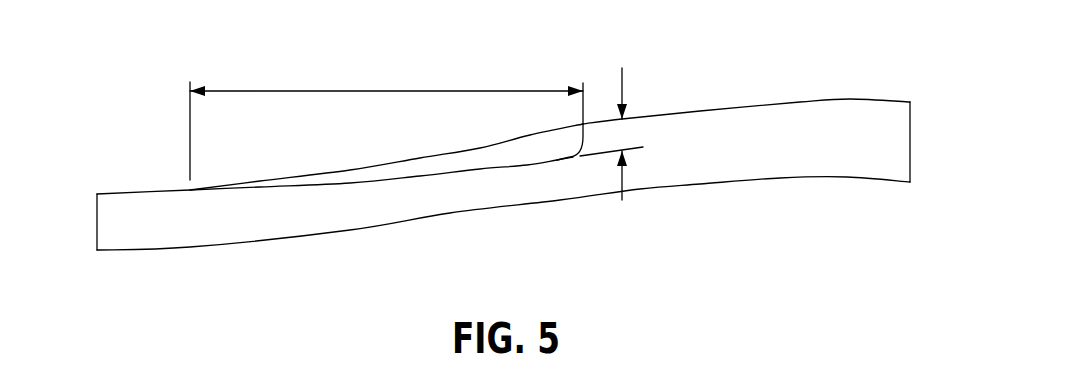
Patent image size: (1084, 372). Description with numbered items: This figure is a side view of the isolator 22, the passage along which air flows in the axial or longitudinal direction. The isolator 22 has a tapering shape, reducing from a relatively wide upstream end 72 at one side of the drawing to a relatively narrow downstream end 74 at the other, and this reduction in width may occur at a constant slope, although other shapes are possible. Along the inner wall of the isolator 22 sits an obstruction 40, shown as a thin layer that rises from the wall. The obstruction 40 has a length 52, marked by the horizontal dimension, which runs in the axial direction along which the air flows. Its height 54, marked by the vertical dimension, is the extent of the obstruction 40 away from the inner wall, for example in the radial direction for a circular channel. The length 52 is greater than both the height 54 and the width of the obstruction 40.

The isolator 22 is at (386, 141).
The obstruction 40 is at (510, 141).
The length 52 is at (387, 91).
The height 54 is at (622, 83).
The upstream end 72 is at (97, 222).
The downstream end 74 is at (910, 140).